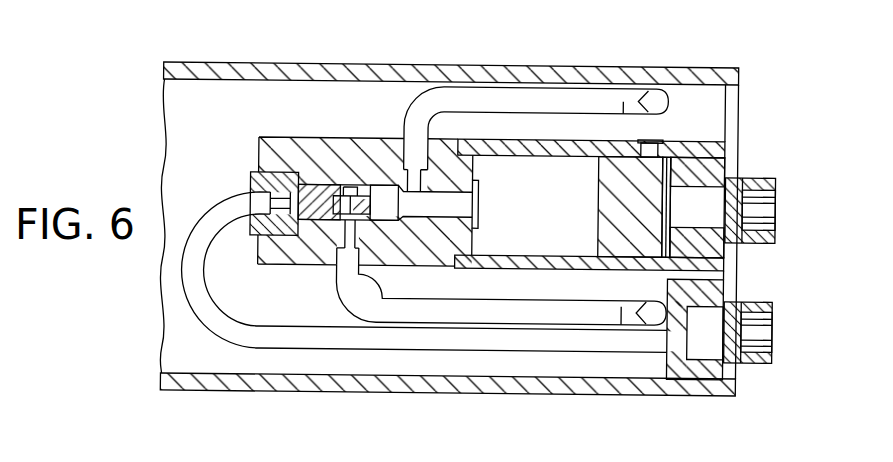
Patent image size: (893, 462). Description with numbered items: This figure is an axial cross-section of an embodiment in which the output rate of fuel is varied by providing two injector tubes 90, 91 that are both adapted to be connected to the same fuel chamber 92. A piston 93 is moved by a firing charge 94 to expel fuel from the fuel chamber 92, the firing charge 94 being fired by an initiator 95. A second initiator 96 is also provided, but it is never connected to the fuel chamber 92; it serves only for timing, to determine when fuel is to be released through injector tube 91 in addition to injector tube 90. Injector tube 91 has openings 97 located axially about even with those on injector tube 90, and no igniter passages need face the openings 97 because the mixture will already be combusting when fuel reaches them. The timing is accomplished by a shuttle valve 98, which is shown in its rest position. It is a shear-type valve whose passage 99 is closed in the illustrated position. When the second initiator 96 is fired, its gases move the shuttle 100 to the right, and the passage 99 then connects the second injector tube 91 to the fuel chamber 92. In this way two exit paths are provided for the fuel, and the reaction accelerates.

The injector tube 90 is at (540, 87).
The injector tube 91 is at (352, 301).
The fuel chamber 92 is at (535, 232).
The piston 93 is at (598, 234).
The firing charge 94 is at (703, 194).
The initiator 95 is at (788, 199).
The second initiator 96 is at (773, 324).
The openings 97 is at (647, 318).
The shuttle valve 98 is at (336, 179).
The passage 99 is at (353, 196).
The shuttle 100 is at (318, 221).